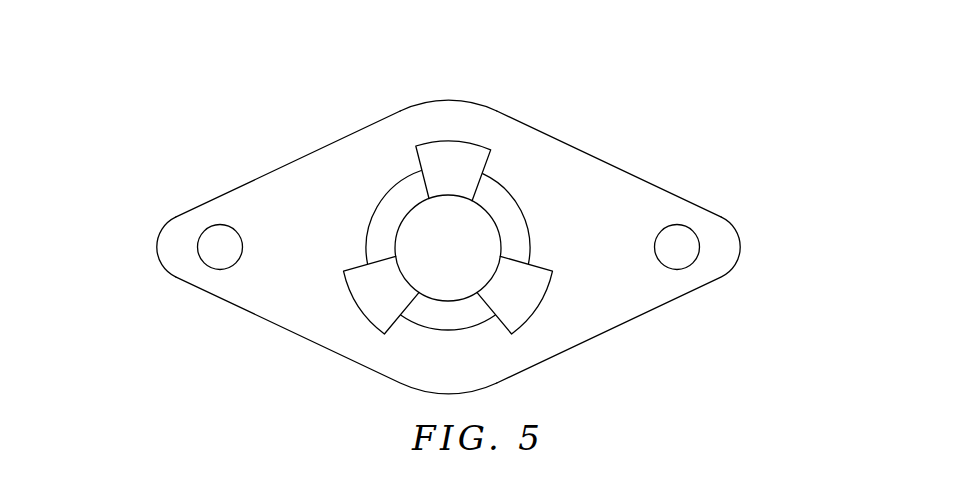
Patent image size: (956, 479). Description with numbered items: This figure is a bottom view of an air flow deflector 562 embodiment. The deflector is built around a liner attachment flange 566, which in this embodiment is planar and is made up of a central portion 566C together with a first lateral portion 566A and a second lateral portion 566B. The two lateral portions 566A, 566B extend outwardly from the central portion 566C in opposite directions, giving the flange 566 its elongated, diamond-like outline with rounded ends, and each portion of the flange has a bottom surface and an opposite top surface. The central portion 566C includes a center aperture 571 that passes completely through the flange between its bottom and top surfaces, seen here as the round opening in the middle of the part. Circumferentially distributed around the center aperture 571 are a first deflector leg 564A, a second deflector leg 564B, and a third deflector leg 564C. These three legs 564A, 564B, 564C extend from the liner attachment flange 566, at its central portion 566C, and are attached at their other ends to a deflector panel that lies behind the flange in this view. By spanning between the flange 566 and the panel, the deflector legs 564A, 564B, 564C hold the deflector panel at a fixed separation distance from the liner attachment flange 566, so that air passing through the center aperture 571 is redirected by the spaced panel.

The air flow deflector 562 is at (710, 170).
The liner attachment flange 566 is at (744, 235).
The first lateral portion 566A is at (173, 253).
The second lateral portion 566B is at (723, 253).
The central portion 566C is at (440, 112).
The center aperture 571 is at (526, 210).
The first deflector leg 564A is at (476, 152).
The second deflector leg 564B is at (527, 303).
The third deflector leg 564C is at (370, 303).